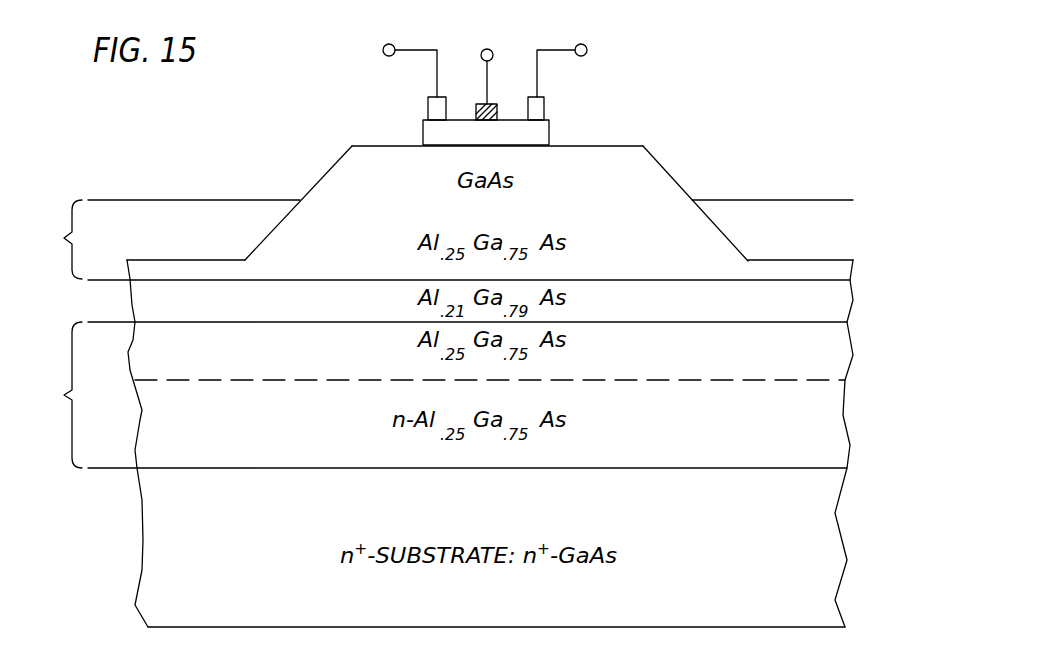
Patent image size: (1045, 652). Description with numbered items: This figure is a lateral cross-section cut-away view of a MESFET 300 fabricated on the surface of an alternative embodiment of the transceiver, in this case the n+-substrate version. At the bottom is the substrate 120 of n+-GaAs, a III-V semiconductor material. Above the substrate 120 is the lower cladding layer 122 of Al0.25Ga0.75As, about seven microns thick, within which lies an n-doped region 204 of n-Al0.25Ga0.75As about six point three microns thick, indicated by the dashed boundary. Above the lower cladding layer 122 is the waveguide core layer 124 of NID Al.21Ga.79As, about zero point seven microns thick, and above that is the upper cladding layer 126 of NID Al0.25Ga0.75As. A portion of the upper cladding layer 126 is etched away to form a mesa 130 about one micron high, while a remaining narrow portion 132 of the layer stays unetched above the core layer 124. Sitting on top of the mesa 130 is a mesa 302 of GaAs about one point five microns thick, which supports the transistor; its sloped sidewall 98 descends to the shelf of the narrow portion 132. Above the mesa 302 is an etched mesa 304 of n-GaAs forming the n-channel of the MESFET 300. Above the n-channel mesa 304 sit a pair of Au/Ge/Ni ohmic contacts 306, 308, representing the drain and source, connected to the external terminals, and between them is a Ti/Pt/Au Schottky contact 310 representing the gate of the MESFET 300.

The mesa sidewall 98 is at (715, 204).
The substrate 120 is at (167, 530).
The lower cladding layer 122 is at (438, 395).
The waveguide core layer 124 is at (140, 305).
The upper cladding layer 126 is at (165, 239).
The mesa 130 is at (288, 242).
The narrow portion 132 is at (186, 268).
The region 204 is at (160, 426).
The MESFET 300 is at (334, 89).
The mesa of GaAs 302 is at (345, 172).
The etched mesa of n-GaAs 304 is at (549, 130).
The ohmic contact 306 is at (428, 110).
The ohmic contact 308 is at (544, 110).
The Schottky contact 310 is at (492, 104).